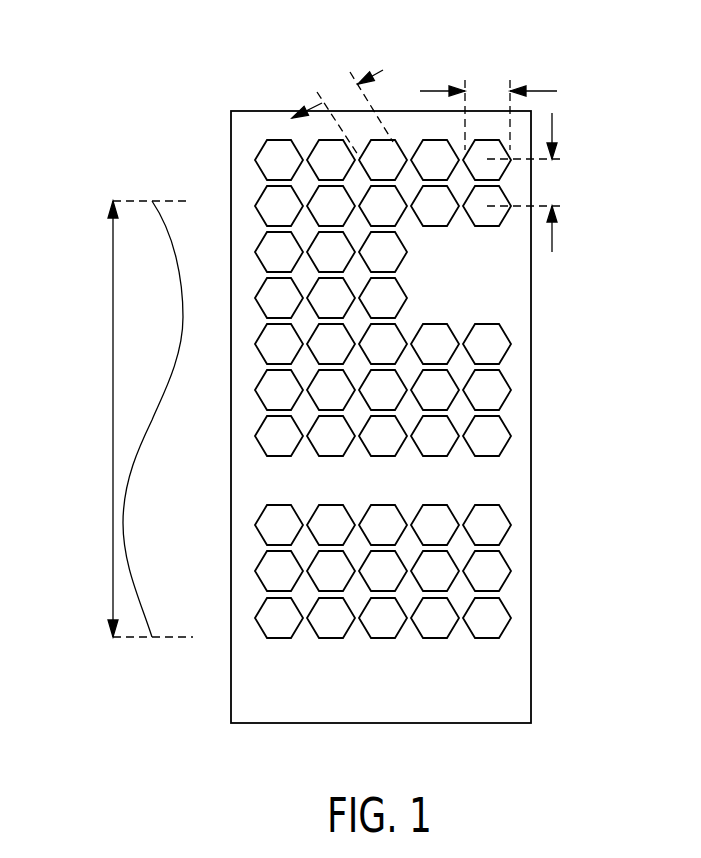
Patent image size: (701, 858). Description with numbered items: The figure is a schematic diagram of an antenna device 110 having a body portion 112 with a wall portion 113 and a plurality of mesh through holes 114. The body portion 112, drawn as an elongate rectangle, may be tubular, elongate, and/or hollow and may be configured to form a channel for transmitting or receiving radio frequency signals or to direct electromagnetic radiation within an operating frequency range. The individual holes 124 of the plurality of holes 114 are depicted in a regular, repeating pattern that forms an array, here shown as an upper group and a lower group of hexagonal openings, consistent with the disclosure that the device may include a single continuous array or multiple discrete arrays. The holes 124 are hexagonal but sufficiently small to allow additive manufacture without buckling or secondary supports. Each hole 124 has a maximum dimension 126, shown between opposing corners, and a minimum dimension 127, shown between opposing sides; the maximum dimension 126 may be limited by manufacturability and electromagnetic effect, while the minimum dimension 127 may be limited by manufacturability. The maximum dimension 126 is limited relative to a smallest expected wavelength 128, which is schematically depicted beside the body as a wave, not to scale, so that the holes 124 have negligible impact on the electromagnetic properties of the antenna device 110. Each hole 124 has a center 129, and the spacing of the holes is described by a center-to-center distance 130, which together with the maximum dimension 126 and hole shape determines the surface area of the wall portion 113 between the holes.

The antenna device 110 is at (172, 105).
The body portion 112 is at (532, 330).
The wall portion 113 is at (422, 298).
The plurality of mesh through holes 114 is at (437, 571).
The hole 124 is at (508, 577).
The maximum dimension 126 is at (548, 91).
The minimum dimension 127 is at (292, 118).
The smallest expected wavelength 128 is at (113, 338).
The center 129 is at (485, 208).
The center-to-center distance 130 is at (555, 241).